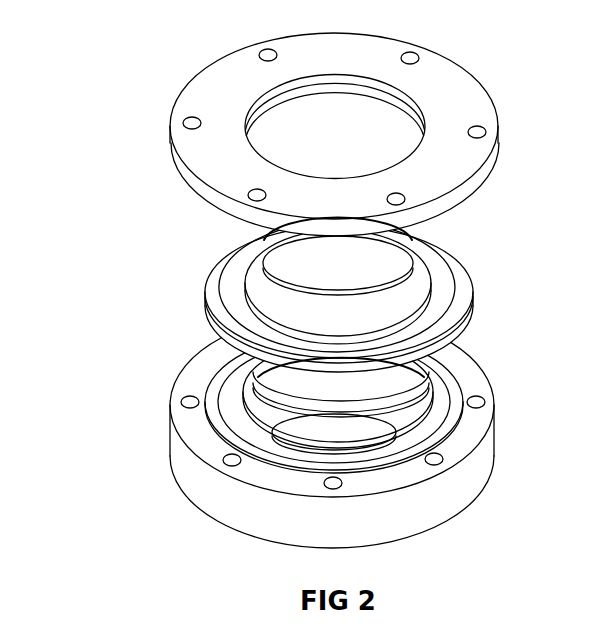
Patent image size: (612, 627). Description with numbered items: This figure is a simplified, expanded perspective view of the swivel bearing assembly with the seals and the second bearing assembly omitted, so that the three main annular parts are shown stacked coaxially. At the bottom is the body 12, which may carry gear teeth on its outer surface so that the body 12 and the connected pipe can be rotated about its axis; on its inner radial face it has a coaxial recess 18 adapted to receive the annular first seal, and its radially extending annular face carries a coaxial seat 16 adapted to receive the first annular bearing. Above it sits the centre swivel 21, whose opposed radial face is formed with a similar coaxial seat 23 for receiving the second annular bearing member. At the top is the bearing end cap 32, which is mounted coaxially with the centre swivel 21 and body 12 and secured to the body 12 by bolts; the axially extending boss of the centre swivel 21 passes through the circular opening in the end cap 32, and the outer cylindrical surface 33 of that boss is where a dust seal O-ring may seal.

The body 12 is at (176, 377).
The coaxial seat 16 is at (437, 382).
The coaxial recess 18 is at (427, 410).
The centre swivel 21 is at (202, 287).
The coaxial seat 23 is at (438, 273).
The bearing end cap 32 is at (177, 92).
The outer cylindrical surface 33 is at (263, 298).